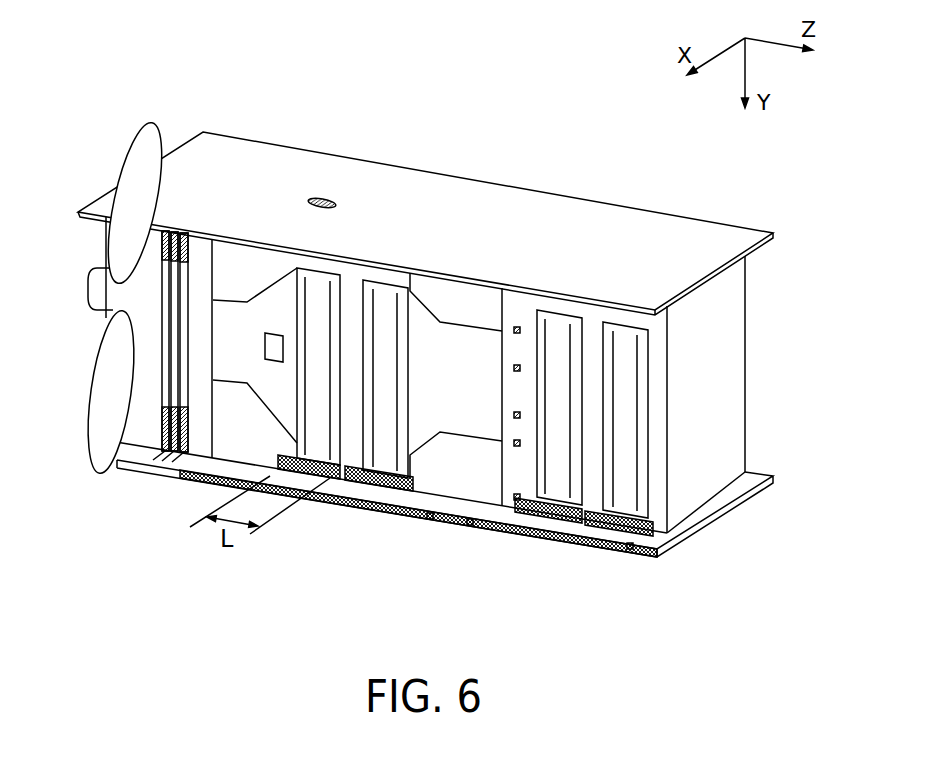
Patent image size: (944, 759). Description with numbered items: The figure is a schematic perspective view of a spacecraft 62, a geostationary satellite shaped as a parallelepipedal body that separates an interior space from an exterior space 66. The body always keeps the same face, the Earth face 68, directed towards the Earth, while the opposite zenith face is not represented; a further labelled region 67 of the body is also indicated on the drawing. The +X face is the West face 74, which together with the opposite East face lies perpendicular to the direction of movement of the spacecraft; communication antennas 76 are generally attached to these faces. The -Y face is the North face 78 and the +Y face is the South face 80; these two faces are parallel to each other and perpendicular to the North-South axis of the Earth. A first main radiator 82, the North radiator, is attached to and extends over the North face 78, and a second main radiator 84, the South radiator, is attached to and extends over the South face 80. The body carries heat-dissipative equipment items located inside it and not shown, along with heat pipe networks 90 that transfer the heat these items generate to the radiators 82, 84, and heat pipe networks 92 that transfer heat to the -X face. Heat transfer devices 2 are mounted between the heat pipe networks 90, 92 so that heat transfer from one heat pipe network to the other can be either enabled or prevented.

The heat transfer device 2 is at (350, 503).
The spacecraft 62 is at (173, 522).
The exterior space 66 is at (541, 373).
The side wall 67 is at (722, 347).
The Earth face 68 is at (710, 475).
The West face 74 is at (140, 422).
The communication antennas 76 is at (91, 411).
The North face 78 is at (425, 205).
The first main radiator 82 is at (483, 178).
The South face 80 is at (445, 549).
The second main radiator 84 is at (537, 547).
The heat pipe networks 90 is at (470, 523).
The heat pipe networks 92 is at (332, 296).